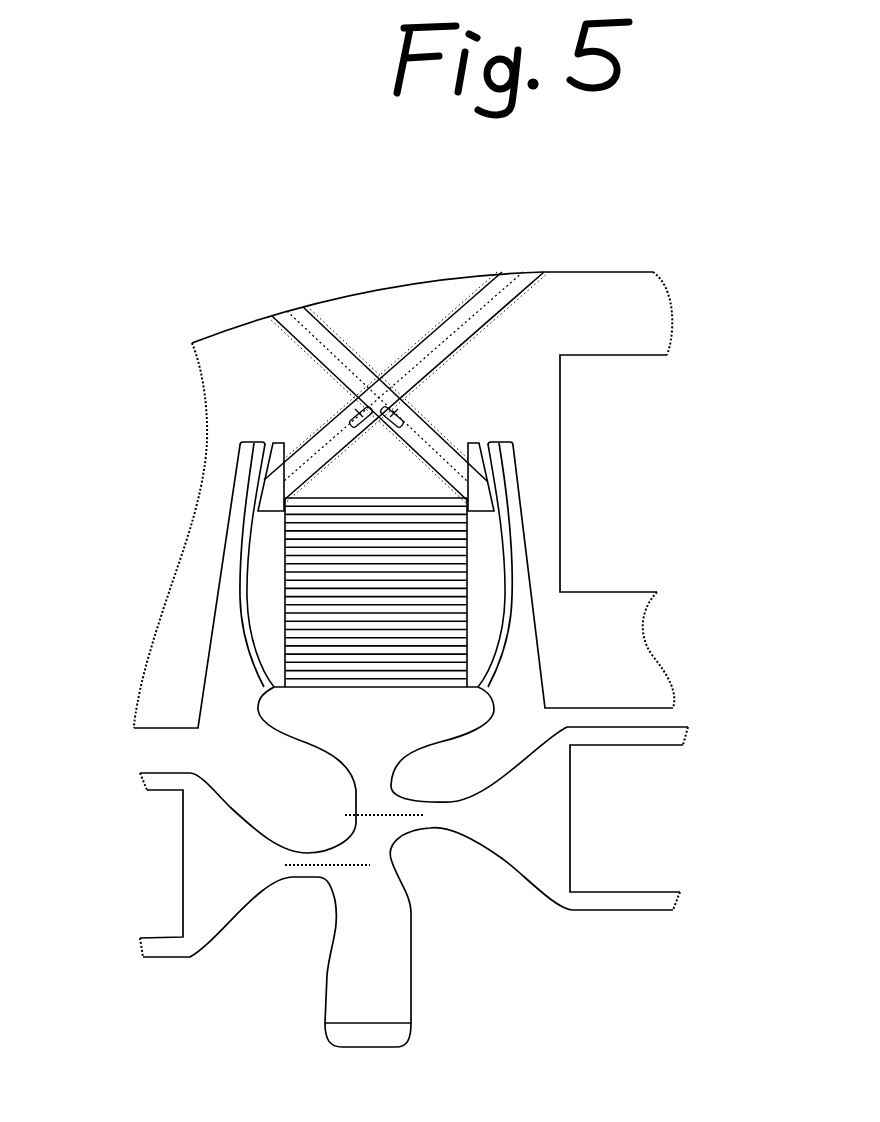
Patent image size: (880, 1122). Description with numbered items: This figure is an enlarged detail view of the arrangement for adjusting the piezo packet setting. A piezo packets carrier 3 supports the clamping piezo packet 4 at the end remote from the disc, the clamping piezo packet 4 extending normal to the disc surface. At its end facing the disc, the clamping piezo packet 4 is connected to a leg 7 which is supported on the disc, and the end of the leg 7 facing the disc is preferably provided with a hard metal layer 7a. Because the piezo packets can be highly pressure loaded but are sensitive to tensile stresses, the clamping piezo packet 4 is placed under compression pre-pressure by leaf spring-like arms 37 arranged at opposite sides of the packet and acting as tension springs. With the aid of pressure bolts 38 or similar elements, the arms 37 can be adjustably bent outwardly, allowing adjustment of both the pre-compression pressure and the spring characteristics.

The piezo packets carrier 3 is at (523, 395).
The clamping piezo packet 4 is at (405, 578).
The leg 7 is at (393, 975).
The hard metal layer 7a is at (325, 1035).
The leaf spring-like arms 37 is at (503, 588).
The pressure bolts 38 is at (310, 343).